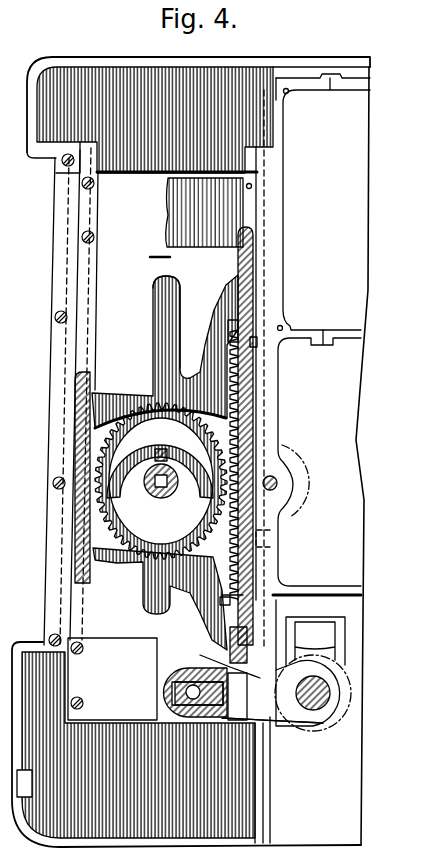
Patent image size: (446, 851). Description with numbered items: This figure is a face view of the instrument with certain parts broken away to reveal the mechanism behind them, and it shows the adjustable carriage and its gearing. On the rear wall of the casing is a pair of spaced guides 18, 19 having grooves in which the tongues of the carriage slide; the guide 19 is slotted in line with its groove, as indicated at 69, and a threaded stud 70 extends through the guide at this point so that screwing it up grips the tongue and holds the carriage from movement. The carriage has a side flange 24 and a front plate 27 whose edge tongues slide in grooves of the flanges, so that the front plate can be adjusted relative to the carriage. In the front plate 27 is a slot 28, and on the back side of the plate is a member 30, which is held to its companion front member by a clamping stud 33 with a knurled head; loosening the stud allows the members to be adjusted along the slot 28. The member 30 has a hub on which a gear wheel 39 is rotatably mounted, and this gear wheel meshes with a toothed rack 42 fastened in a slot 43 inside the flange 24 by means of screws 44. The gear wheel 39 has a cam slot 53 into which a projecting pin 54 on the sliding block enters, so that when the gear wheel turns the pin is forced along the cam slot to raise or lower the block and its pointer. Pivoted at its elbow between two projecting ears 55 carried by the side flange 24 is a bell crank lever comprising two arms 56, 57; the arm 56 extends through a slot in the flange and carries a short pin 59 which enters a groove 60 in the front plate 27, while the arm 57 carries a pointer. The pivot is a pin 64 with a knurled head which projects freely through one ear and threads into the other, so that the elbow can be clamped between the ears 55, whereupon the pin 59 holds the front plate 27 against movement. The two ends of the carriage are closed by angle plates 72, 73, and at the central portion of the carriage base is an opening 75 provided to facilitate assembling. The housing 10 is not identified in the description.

The housing 10 is at (191, 452).
The guide 18 is at (86, 163).
The guide 19 is at (264, 169).
The side flange 24 is at (248, 387).
The front plate 27 is at (165, 462).
The slot 28 is at (153, 308).
The member 30 is at (157, 492).
The clamping stud 33 is at (175, 485).
The gear wheel 39 is at (161, 481).
The toothed rack 42 is at (231, 372).
The slot 43 is at (240, 313).
The screws 44 is at (253, 338).
The cam slot 53 is at (146, 455).
The projecting pin 54 is at (182, 455).
The projecting ears 55 is at (263, 727).
The arm 56 is at (221, 659).
The arm 57 is at (341, 635).
The short pin 59 is at (188, 690).
The groove 60 is at (190, 686).
The pin 64 is at (320, 702).
The slot 69 is at (276, 532).
The threaded stud 70 is at (270, 483).
The angle plate 72 is at (236, 178).
The angle plate 73 is at (104, 718).
The opening 75 is at (140, 404).